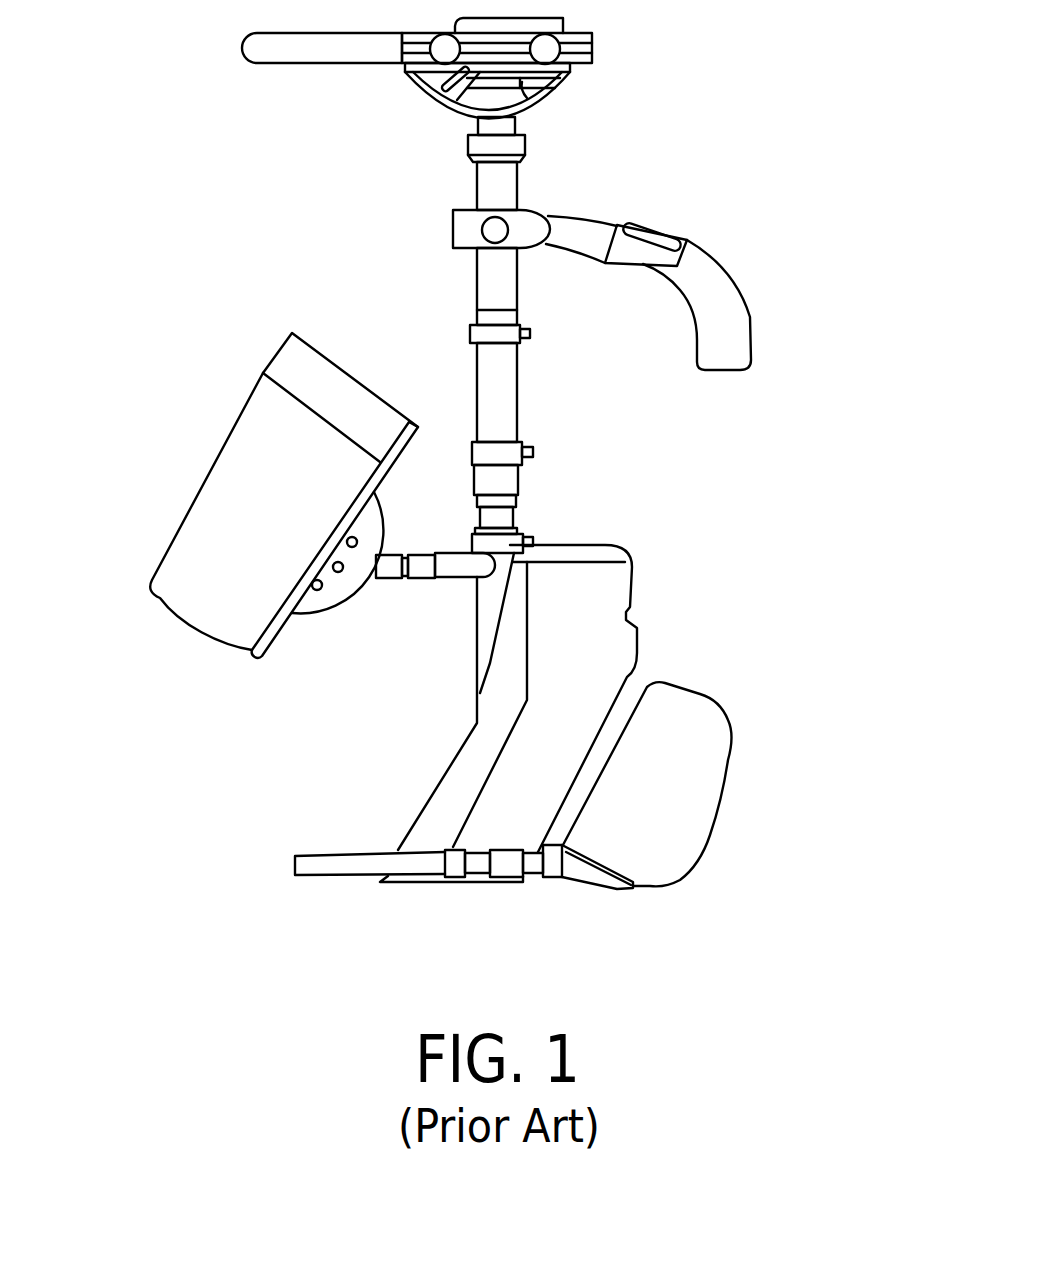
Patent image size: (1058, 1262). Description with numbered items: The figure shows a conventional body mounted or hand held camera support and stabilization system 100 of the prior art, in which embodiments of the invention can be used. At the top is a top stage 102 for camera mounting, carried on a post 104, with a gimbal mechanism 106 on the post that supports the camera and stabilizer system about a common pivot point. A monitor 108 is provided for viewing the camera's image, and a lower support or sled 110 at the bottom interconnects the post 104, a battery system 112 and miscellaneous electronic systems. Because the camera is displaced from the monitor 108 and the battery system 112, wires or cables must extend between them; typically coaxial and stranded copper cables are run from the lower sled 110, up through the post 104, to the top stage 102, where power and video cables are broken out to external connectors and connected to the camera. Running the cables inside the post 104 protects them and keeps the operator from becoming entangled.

The camera support and stabilization system 100 is at (889, 63).
The top stage 102 is at (318, 63).
The post 104 is at (477, 293).
The gimbal mechanism 106 is at (593, 222).
The monitor 108 is at (213, 612).
The lower support (sled) 110 is at (425, 751).
The battery system 112 is at (697, 717).